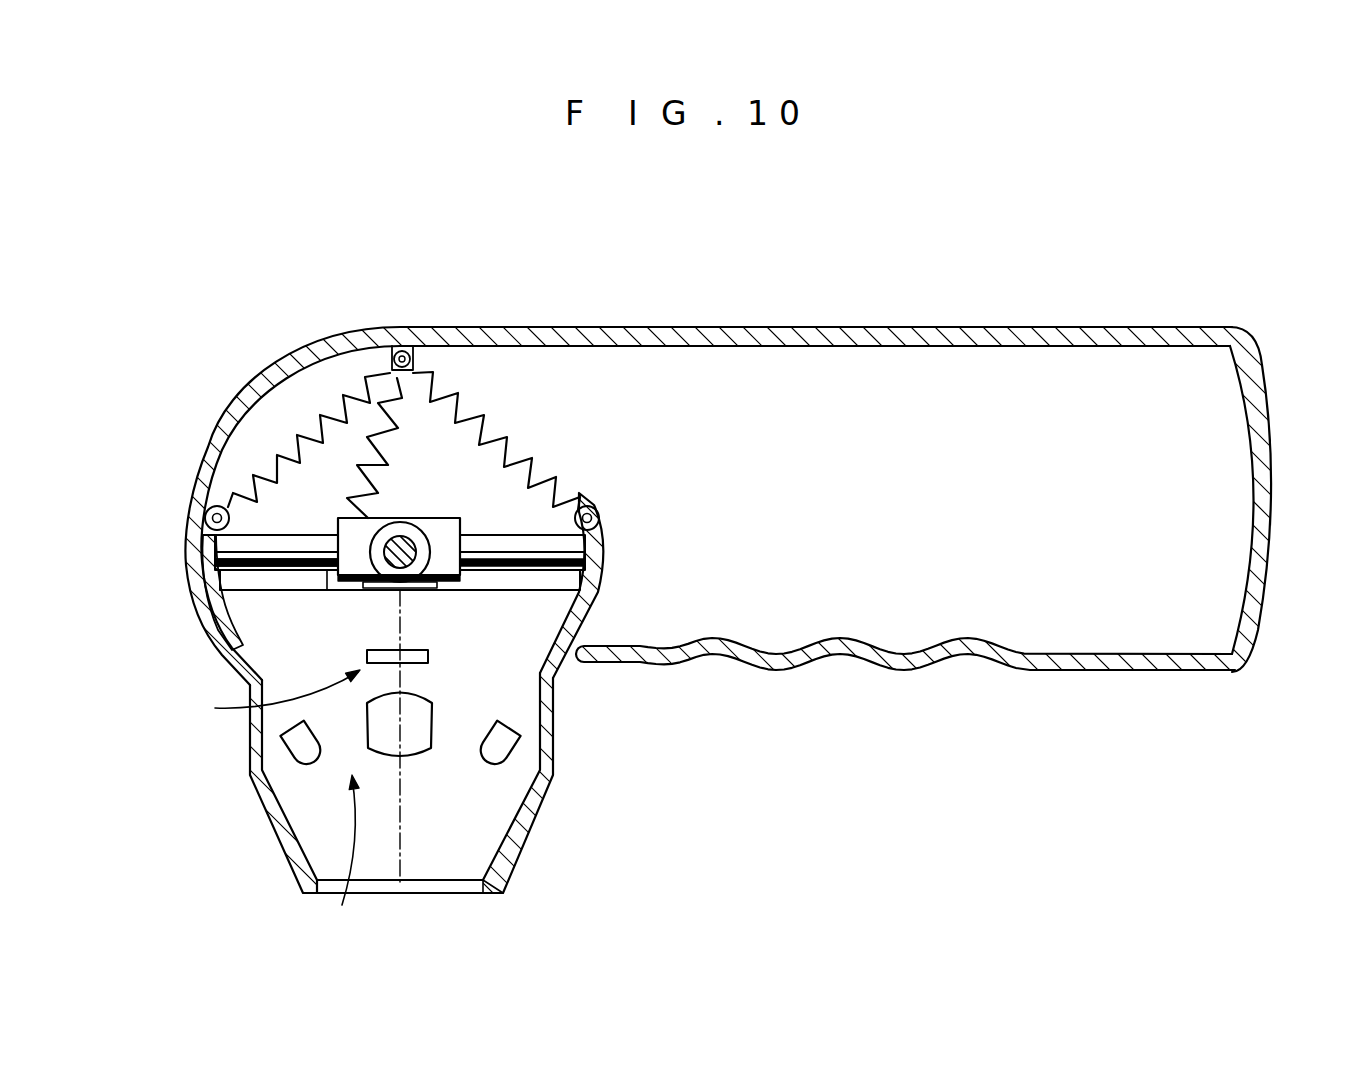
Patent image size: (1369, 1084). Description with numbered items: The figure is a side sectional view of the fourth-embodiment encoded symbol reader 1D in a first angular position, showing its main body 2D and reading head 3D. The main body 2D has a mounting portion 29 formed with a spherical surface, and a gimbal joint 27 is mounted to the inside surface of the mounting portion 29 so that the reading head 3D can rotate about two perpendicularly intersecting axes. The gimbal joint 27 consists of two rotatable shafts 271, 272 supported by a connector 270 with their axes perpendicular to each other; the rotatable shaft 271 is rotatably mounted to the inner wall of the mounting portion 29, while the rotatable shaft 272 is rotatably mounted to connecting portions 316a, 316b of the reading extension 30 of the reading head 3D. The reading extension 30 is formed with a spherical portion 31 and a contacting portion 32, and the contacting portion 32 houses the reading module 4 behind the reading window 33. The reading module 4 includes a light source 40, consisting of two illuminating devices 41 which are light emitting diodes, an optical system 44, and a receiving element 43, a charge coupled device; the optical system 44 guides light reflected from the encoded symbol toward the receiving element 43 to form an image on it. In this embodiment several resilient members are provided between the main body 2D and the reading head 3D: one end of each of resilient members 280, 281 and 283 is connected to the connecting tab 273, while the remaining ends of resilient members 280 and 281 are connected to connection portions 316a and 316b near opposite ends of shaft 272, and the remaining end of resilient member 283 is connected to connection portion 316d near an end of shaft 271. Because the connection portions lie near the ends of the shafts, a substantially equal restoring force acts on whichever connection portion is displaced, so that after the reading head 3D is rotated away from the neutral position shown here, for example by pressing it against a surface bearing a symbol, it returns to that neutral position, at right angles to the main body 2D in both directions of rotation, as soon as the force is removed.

The encoded symbol reader 1D is at (1103, 308).
The main body 2D is at (1275, 457).
The mounting portion 29 is at (250, 382).
The spherical portion 31 is at (593, 613).
The reading extension 30 is at (275, 853).
The reading head 3D is at (551, 782).
The contacting portion 32 is at (490, 897).
The reading window 33 is at (441, 887).
The connection portion 316a is at (190, 545).
The connection portion 316b is at (600, 533).
The connection portion 316d is at (327, 578).
The rotatable shaft 272 is at (256, 564).
The gimbal joint 27 is at (375, 590).
The connector 270 is at (337, 527).
The rotatable shaft 271 is at (417, 563).
The connecting tab 273 is at (398, 346).
The resilient member 283 is at (405, 372).
The resilient member 280 is at (333, 405).
The resilient member 281 is at (470, 415).
The receiving element 43 is at (430, 653).
The optical system 44 is at (417, 742).
The illuminating device 41 is at (287, 747).
The reading module 4 is at (271, 700).
The light source 40 is at (339, 862).